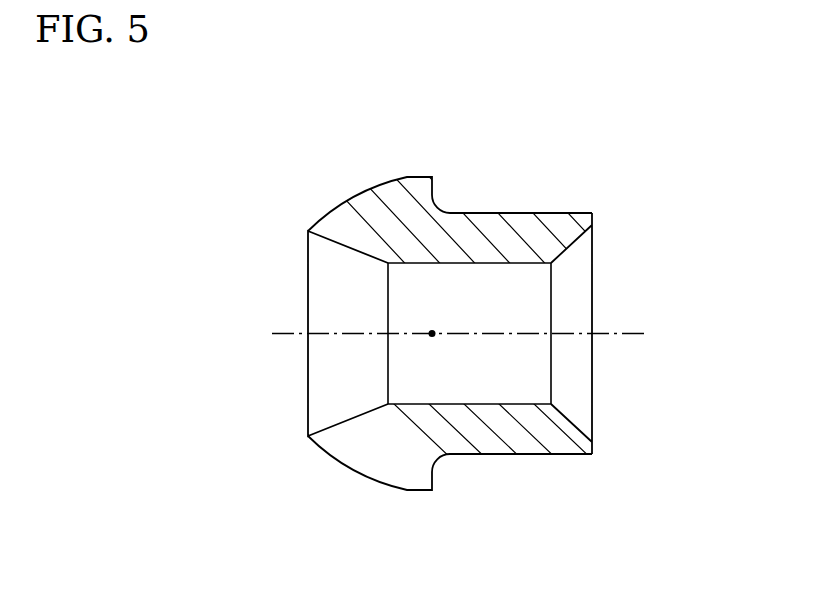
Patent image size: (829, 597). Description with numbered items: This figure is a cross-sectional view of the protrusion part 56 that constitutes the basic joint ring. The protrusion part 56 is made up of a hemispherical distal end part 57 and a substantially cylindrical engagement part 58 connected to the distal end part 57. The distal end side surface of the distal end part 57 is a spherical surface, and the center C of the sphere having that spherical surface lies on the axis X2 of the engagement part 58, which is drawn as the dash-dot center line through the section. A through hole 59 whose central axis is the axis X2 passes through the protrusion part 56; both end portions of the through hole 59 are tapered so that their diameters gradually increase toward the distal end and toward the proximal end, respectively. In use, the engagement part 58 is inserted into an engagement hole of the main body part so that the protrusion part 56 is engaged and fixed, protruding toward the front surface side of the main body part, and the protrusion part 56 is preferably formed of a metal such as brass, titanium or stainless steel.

The protrusion part 56 is at (602, 162).
The distal end part 57 is at (352, 180).
The engagement part 58 is at (528, 477).
The through hole 59 is at (609, 303).
The center C is at (432, 330).
The axis X2 is at (477, 336).